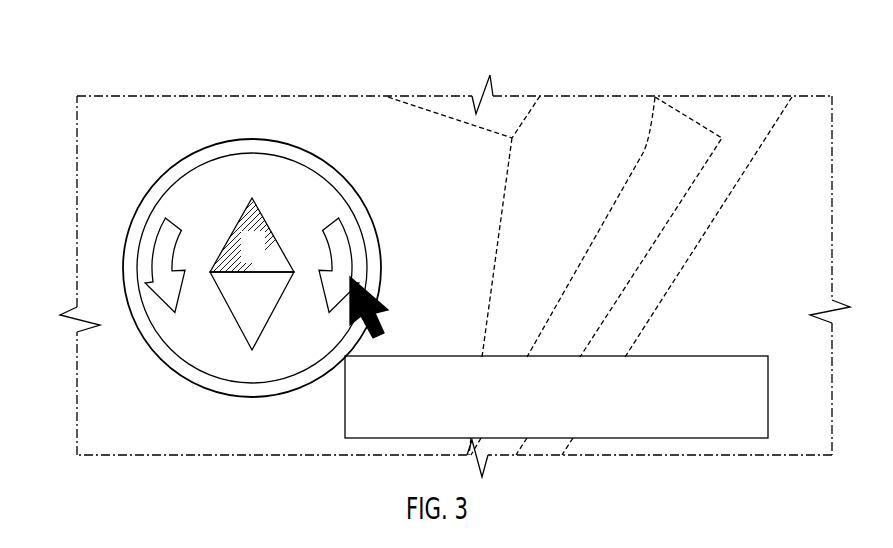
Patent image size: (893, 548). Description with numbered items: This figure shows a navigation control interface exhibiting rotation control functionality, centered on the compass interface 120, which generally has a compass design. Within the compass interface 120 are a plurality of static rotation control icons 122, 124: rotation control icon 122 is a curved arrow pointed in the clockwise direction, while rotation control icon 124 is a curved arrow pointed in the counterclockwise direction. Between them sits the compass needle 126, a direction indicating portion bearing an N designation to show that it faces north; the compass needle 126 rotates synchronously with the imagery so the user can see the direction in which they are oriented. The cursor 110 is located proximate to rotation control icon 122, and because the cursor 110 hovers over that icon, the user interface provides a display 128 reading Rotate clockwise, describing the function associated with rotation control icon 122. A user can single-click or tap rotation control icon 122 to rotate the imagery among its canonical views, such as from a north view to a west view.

The cursor 110 is at (362, 330).
The compass interface 120 is at (267, 142).
The rotation control icon 122 is at (350, 253).
The rotation control icon 124 is at (152, 257).
The compass needle 126 is at (243, 207).
The display 128 is at (688, 413).